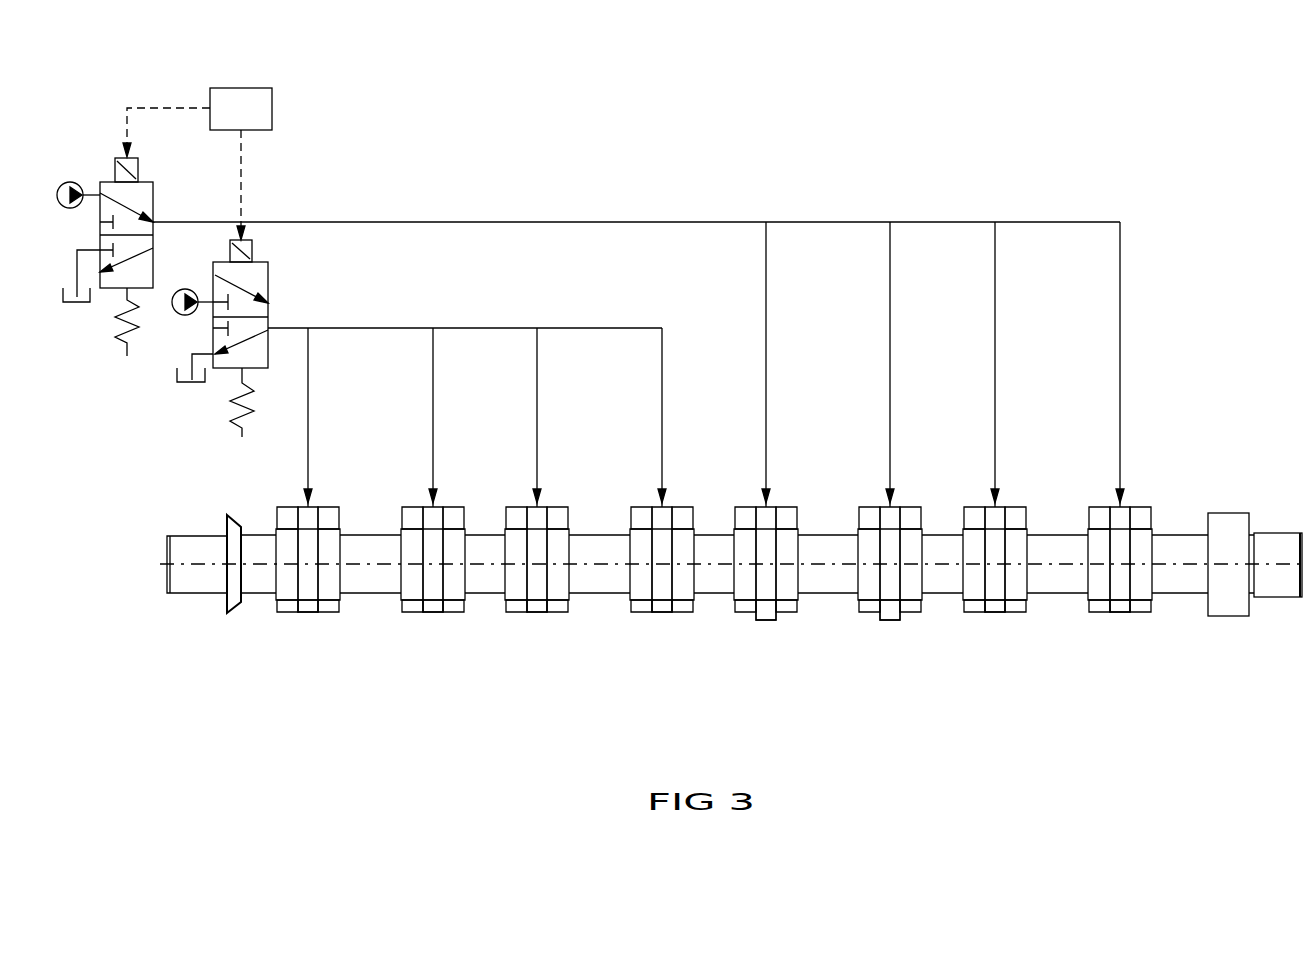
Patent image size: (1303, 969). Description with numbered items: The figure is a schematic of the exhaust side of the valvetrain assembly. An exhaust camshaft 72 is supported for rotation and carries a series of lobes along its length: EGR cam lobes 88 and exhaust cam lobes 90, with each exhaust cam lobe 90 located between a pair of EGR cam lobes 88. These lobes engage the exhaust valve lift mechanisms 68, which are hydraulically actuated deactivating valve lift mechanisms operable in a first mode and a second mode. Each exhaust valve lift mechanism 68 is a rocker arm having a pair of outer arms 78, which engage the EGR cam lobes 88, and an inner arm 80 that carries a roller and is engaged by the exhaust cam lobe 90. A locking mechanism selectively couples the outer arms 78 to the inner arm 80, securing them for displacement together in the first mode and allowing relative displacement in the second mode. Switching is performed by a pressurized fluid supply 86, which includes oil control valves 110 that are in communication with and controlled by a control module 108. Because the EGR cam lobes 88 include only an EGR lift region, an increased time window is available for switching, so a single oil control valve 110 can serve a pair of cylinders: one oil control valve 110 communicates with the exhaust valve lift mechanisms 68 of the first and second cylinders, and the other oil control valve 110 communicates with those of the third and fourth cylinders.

The exhaust valve lift mechanism 68 is at (273, 618).
The exhaust camshaft 72 is at (1198, 463).
The outer arms 78 is at (293, 507).
The inner arm 80 is at (770, 529).
The pressurized fluid supply 86 is at (66, 156).
The EGR cam lobes 88 is at (276, 529).
The exhaust cam lobes 90 is at (312, 529).
The control module 108 is at (222, 120).
The oil control valves 110 is at (153, 197).